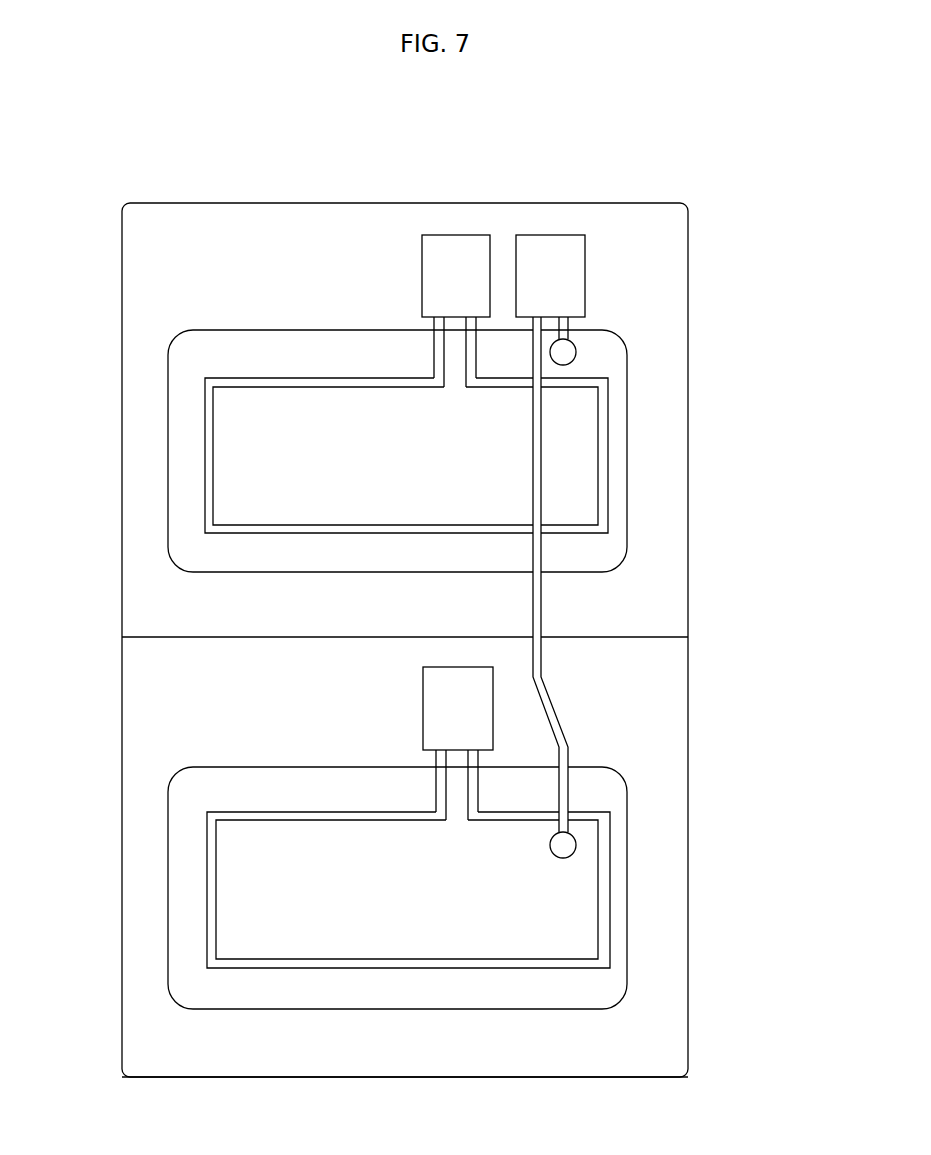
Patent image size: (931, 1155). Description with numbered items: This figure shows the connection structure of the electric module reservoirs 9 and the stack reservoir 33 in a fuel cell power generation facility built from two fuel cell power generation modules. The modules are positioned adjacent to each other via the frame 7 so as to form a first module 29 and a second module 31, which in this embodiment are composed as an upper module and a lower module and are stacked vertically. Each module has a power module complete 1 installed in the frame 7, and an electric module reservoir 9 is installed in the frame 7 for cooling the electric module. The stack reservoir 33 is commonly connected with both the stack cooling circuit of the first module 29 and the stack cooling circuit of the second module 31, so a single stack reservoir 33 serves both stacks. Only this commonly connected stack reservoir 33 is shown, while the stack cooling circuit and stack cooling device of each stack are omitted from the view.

The power module complete (PMC) 1 is at (160, 441).
The frame 7 is at (688, 444).
The electric module reservoir 9 is at (447, 242).
The first module 29 is at (706, 342).
The second module 31 is at (706, 932).
The stack reservoir 33 is at (558, 243).